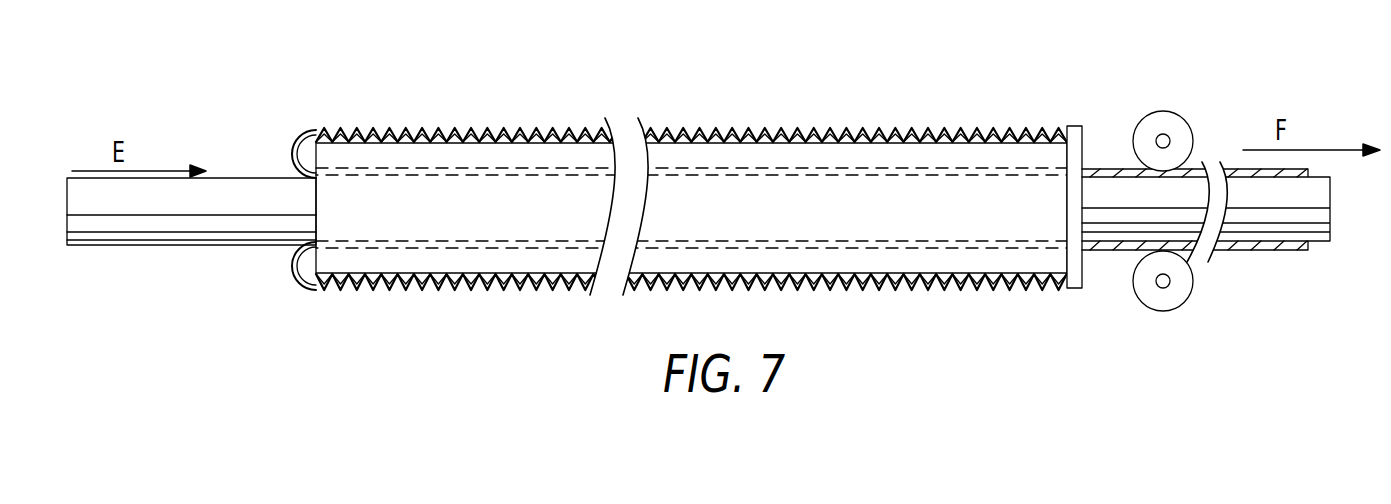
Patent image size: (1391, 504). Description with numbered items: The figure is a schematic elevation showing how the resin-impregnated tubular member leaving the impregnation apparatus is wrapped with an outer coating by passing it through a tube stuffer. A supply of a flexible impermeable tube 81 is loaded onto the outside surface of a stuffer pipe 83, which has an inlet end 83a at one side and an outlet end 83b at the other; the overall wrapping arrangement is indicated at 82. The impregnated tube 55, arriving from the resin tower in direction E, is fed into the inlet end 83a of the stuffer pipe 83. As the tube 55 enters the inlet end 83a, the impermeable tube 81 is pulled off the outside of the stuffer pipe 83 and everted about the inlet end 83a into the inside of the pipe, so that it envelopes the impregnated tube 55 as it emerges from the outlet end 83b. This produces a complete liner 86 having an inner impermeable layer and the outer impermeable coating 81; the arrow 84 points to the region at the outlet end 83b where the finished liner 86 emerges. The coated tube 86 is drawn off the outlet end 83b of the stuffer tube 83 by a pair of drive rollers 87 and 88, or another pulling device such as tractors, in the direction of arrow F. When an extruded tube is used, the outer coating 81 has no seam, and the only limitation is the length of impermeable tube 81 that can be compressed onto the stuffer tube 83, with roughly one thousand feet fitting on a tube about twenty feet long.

The impregnated tube 55 is at (100, 235).
The flexible impermeable tube 81 is at (430, 285).
The sleeve assembly 82 is at (774, 96).
The stuffer pipe 83 is at (362, 260).
The inlet end 83a is at (292, 262).
The outlet end 83b is at (1085, 137).
The direction arrow 84 is at (1062, 306).
The complete liner 86 is at (1102, 228).
The drive roller 87 is at (1190, 123).
The drive roller 88 is at (1180, 308).